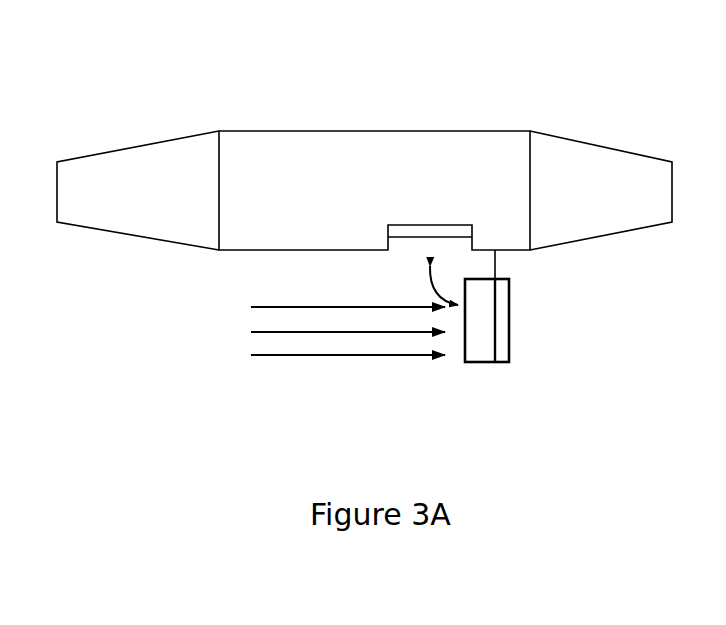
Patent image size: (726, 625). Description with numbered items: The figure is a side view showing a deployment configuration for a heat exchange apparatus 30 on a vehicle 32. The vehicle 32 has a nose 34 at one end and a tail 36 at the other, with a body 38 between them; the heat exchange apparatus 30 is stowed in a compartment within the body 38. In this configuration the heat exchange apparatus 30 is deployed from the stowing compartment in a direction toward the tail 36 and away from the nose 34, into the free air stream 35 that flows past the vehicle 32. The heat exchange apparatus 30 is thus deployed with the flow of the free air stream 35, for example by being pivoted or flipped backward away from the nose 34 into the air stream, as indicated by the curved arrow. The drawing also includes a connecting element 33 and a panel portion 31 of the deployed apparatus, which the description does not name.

The vehicle 32 is at (370, 136).
The nose 34 is at (187, 138).
The tail 36 is at (622, 152).
The body 38 is at (457, 130).
The connecting lead 33 is at (495, 258).
The photodetector 31 is at (483, 363).
The heat exchange apparatus 30 is at (511, 343).
The free air stream 35 is at (347, 356).